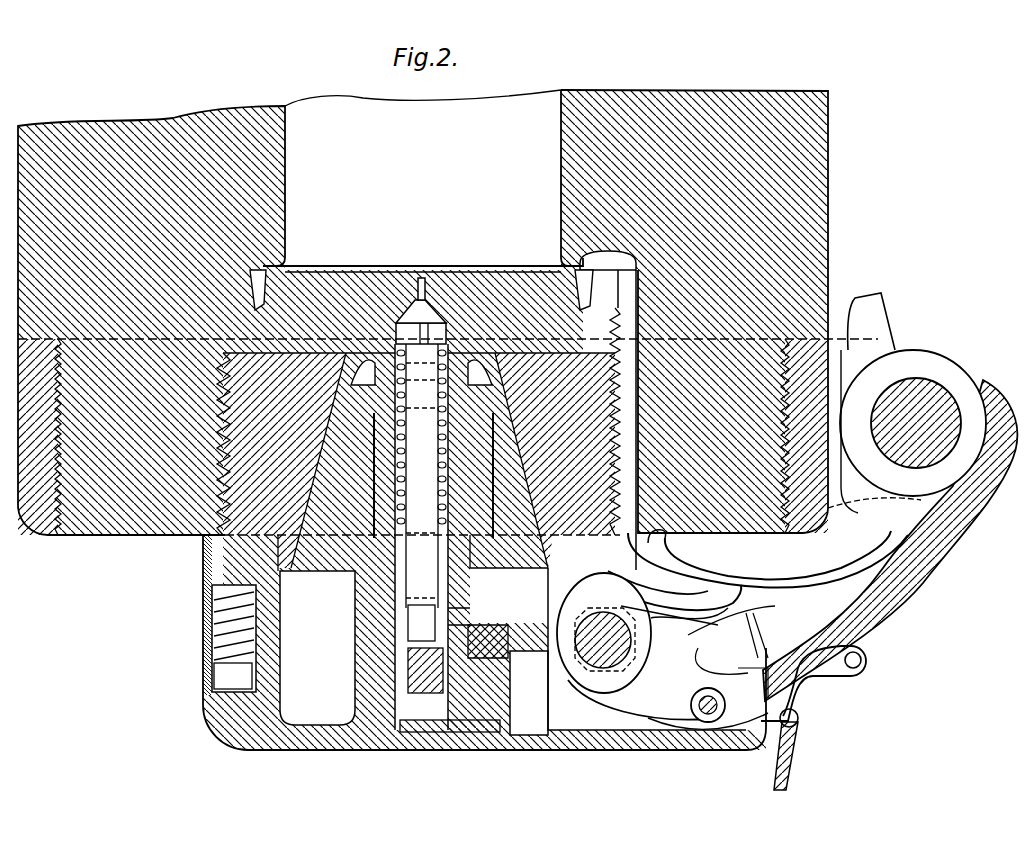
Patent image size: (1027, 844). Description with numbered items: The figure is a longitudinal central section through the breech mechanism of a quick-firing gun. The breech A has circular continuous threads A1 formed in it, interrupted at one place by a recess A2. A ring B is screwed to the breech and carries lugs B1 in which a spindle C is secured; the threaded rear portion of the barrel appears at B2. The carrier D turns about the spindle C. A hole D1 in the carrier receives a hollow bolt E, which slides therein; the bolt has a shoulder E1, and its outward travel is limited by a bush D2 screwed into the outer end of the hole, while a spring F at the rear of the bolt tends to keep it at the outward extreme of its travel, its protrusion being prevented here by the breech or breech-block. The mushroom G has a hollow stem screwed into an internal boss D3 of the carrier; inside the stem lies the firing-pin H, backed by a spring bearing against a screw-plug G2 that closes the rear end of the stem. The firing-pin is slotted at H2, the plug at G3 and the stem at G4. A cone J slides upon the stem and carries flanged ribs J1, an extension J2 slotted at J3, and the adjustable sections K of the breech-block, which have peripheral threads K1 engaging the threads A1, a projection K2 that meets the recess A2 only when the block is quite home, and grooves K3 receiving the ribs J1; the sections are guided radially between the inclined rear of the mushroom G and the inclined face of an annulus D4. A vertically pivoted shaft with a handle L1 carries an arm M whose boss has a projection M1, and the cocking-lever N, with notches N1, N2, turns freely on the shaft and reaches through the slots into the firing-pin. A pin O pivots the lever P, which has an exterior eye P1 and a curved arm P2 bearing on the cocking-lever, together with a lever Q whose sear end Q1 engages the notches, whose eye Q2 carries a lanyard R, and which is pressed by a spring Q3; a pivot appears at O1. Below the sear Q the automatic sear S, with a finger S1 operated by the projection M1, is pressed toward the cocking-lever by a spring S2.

The breech A is at (694, 299).
The threads A1 is at (222, 350).
The recess A2 is at (226, 330).
The ring B is at (38, 437).
The lugs B1 is at (833, 342).
The barrel thread B2 is at (806, 436).
The spindle C is at (913, 423).
The carrier D is at (915, 568).
The hole D1 is at (205, 669).
The bush D2 is at (205, 533).
The internal boss D3 is at (354, 688).
The annulus D4 is at (444, 567).
The hollow bolt E is at (206, 583).
The shoulder E1 is at (207, 565).
The spring F is at (208, 657).
The mushroom G is at (423, 309).
The screw-plug G2 is at (450, 724).
The slot in plug G3 is at (436, 670).
The slot in stem G4 is at (488, 650).
The firing-pin H is at (422, 476).
The slot in firing-pin H2 is at (387, 594).
The cone J is at (419, 460).
The flanged ribs J1 is at (345, 360).
The extension J2 is at (529, 693).
The slot J3 is at (509, 595).
The adjustable sections K is at (419, 460).
The threads K1 is at (653, 408).
The projection K2 is at (605, 412).
The groove K3 is at (485, 360).
The handle L1 is at (317, 706).
The arm M is at (628, 584).
The projection M1 is at (706, 654).
The cocking-lever N is at (604, 633).
The notch N1 is at (669, 615).
The notch N2 is at (739, 680).
The pin O is at (603, 640).
The pivot pin O1 is at (718, 705).
The lever P is at (790, 683).
The eye P1 is at (860, 652).
The curved arm P2 is at (638, 699).
The lever Q is at (708, 732).
The sear end Q1 is at (742, 617).
The eye Q2 is at (791, 708).
The spring Q3 is at (756, 638).
The lanyard R is at (786, 736).
The automatic sear S is at (748, 635).
The finger S1 is at (729, 670).
The spring S2 is at (760, 635).